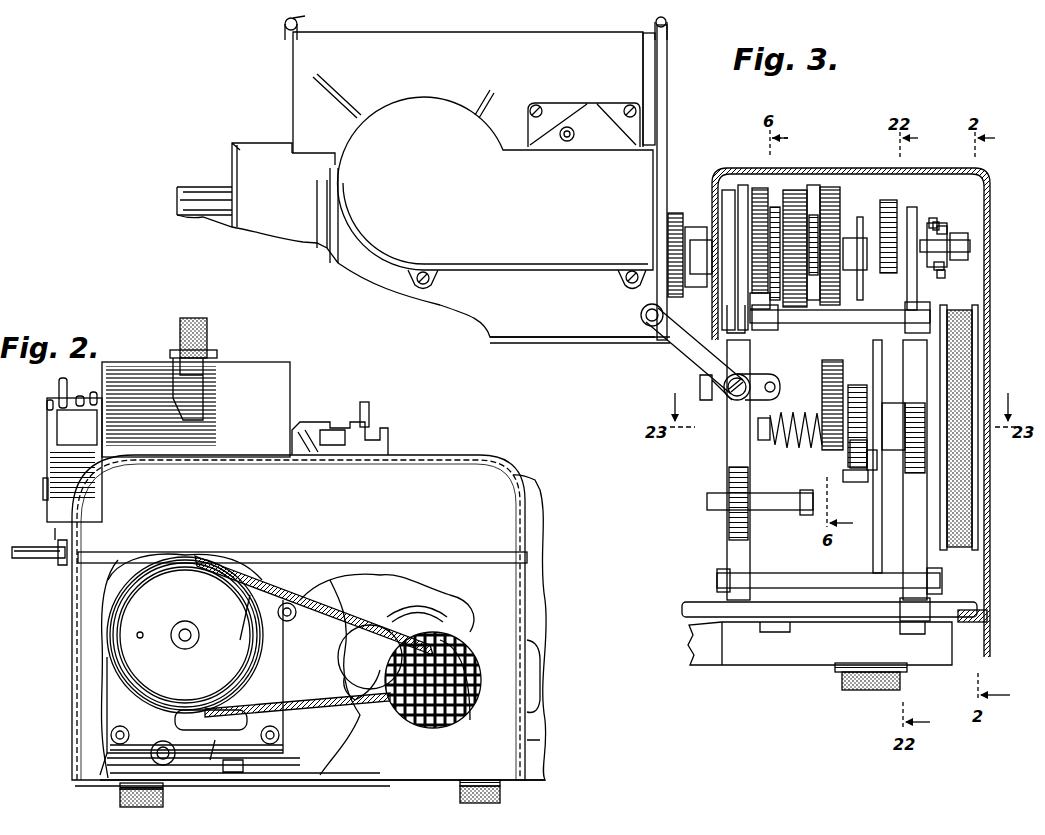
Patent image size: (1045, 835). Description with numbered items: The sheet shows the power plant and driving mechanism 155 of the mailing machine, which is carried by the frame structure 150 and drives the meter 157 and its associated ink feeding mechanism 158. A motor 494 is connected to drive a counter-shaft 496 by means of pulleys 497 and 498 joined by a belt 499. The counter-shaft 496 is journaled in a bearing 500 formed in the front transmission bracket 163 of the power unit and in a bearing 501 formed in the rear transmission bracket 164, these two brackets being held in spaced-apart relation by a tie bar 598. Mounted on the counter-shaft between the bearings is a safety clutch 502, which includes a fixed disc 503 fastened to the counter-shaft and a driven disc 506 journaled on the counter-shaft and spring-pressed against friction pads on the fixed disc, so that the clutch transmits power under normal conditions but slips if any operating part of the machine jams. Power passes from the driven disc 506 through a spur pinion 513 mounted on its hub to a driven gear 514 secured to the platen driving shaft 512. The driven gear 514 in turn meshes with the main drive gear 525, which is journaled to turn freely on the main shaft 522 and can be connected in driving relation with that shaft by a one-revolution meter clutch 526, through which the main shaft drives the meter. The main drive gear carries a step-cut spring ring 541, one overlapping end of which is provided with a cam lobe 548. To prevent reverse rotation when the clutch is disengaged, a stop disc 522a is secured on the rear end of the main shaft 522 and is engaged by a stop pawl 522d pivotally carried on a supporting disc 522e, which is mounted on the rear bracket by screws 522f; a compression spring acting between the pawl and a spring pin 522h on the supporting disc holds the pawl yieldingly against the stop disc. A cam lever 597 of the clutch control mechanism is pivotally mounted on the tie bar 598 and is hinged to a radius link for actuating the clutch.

In FIG. 3, the frame structure 150 is at (750, 668).
In FIG. 2, the frame structure 150 is at (385, 790).
In FIG. 3, the power plant and driving mechanism 155 is at (864, 186).
In FIG. 2, the power plant and driving mechanism 155 is at (441, 447).
In FIG. 3, the meter 157 is at (284, 62).
In FIG. 2, the meter 157 is at (246, 359).
In FIG. 2, the ink feeding mechanism for the meter 158 is at (331, 417).
In FIG. 3, the front transmission bracket 163 is at (736, 535).
In FIG. 3, the rear transmission bracket 164 is at (918, 546).
In FIG. 2, the rear transmission bracket 164 is at (205, 740).
In FIG. 2, the motor 494 is at (410, 603).
In FIG. 3, the counter-shaft 496 is at (758, 436).
In FIG. 2, the counter-shaft 496 is at (188, 632).
In FIG. 2, the pulley 497 is at (397, 660).
In FIG. 3, the pulley 498 is at (974, 394).
In FIG. 2, the pulley 498 is at (156, 570).
In FIG. 3, the belt 499 is at (962, 500).
In FIG. 2, the belt 499 is at (308, 700).
In FIG. 3, the bearing 500 is at (722, 433).
In FIG. 3, the bearing 501 is at (900, 443).
In FIG. 3, the safety clutch 502 is at (872, 464).
In FIG. 3, the fixed disc 503 is at (853, 493).
In FIG. 3, the driven disc 506 is at (853, 468).
In FIG. 3, the platen driving shaft 512 is at (895, 367).
In FIG. 3, the spur pinion 513 is at (839, 450).
In FIG. 3, the driven gear 514 is at (838, 384).
In FIG. 3, the main shaft 522 is at (968, 247).
In FIG. 3, the stop disc 522a is at (943, 278).
In FIG. 3, the stop pawl 522d is at (941, 270).
In FIG. 3, the supporting disc 522e is at (935, 222).
In FIG. 3, the screws 522f is at (933, 218).
In FIG. 3, the spring pin 522h is at (938, 227).
In FIG. 3, the main drive gear 525 is at (832, 190).
In FIG. 3, the meter clutch 526 is at (773, 188).
In FIG. 3, the spring ring 541 is at (792, 205).
In FIG. 3, the cam lobe 548 is at (802, 186).
In FIG. 3, the cam lever 597 is at (727, 318).
In FIG. 3, the tie bar 598 is at (829, 448).